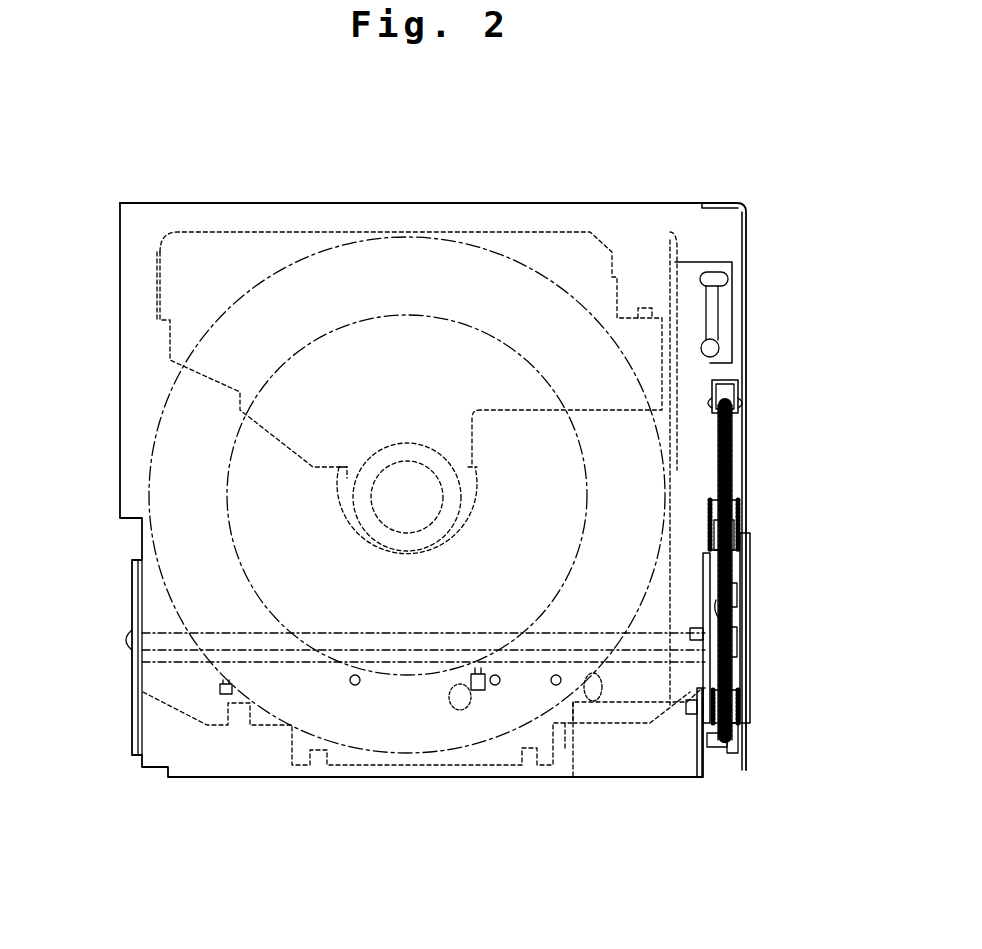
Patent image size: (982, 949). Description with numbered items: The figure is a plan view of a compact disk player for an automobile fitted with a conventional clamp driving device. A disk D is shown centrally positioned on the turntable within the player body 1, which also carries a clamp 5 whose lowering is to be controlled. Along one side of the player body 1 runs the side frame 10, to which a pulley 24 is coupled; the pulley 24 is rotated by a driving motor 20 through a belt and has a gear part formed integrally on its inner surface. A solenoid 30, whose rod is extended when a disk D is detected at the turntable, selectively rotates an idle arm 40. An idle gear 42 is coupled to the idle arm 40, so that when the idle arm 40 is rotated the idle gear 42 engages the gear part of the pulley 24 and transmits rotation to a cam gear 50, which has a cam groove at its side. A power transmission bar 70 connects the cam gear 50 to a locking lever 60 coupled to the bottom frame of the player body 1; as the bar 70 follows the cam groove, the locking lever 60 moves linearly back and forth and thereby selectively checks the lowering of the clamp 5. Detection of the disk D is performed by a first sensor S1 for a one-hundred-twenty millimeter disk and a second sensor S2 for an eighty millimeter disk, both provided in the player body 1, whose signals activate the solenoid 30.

The player body 1 is at (120, 200).
The disk D is at (450, 353).
The clamp 5 is at (345, 502).
The locking lever 60 is at (727, 292).
The power transmission bar 70 is at (735, 373).
The cam gear 50 is at (725, 437).
The idle arm 40 is at (720, 512).
The idle gear 42 is at (730, 527).
The pulley 24 is at (748, 578).
The solenoid 30 is at (730, 593).
The side frame 10 is at (712, 662).
The first sensor S1 is at (225, 700).
The second sensor S2 is at (478, 690).
The driving motor 20 is at (645, 770).